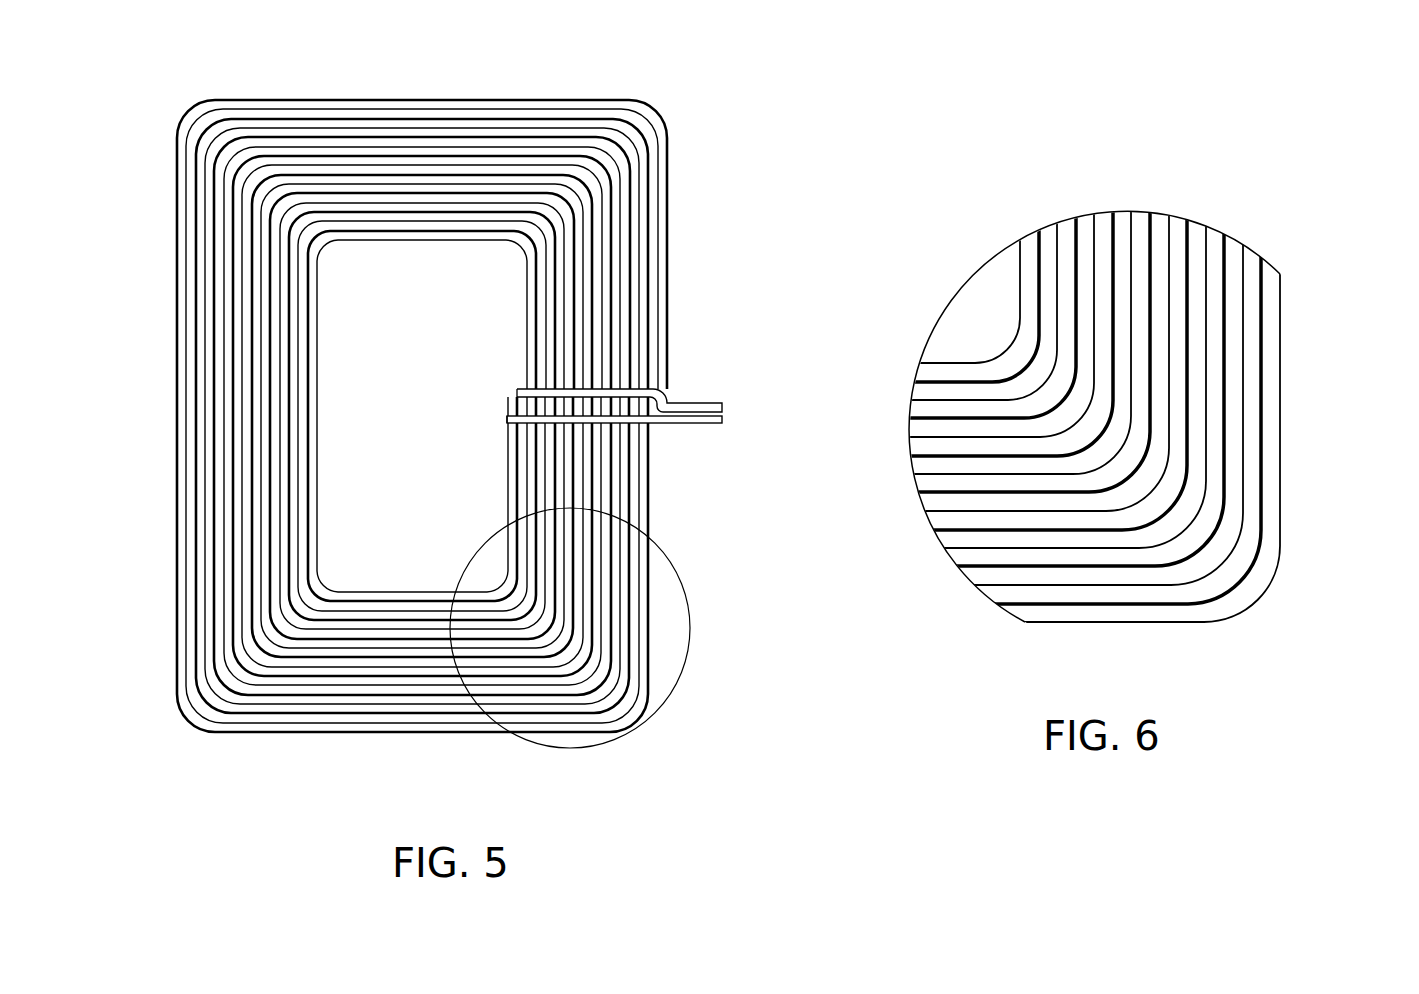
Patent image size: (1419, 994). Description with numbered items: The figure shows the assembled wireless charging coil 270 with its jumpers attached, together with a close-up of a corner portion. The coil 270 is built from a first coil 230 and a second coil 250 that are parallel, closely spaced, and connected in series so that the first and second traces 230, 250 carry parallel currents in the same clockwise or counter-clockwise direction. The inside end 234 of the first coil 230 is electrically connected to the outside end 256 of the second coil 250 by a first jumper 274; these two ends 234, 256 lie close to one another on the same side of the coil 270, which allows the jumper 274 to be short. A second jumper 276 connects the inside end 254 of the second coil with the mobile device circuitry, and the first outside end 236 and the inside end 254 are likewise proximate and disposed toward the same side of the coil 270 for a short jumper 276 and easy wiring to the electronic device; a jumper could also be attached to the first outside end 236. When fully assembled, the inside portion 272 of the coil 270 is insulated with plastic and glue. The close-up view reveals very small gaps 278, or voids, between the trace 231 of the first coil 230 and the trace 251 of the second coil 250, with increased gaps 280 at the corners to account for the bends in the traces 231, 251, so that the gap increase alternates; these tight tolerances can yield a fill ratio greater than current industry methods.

In FIG. 5, the first coil 230 is at (676, 278).
In FIG. 6, the first coil 230 is at (1297, 560).
In FIG. 6, the trace of the first coil 231 is at (1272, 360).
In FIG. 5, the inside end of the first coil 234 is at (497, 369).
In FIG. 5, the first outside end 236 is at (731, 410).
In FIG. 5, the second coil 250 is at (399, 578).
In FIG. 6, the second coil 250 is at (1006, 271).
In FIG. 6, the trace of the second coil 251 is at (1253, 338).
In FIG. 5, the inside end of the second coil 254 is at (500, 404).
In FIG. 5, the outside end of the second coil 256 is at (665, 377).
In FIG. 5, the wireless charging coil 270 is at (731, 141).
In FIG. 6, the wireless charging coil 270 is at (1220, 178).
In FIG. 5, the inside portion of the assembled coil 272 is at (401, 306).
In FIG. 5, the first jumper 274 is at (520, 359).
In FIG. 5, the second jumper 276 is at (667, 425).
In FIG. 6, the gaps 278 is at (1265, 515).
In FIG. 6, the increased gaps 280 is at (1142, 497).